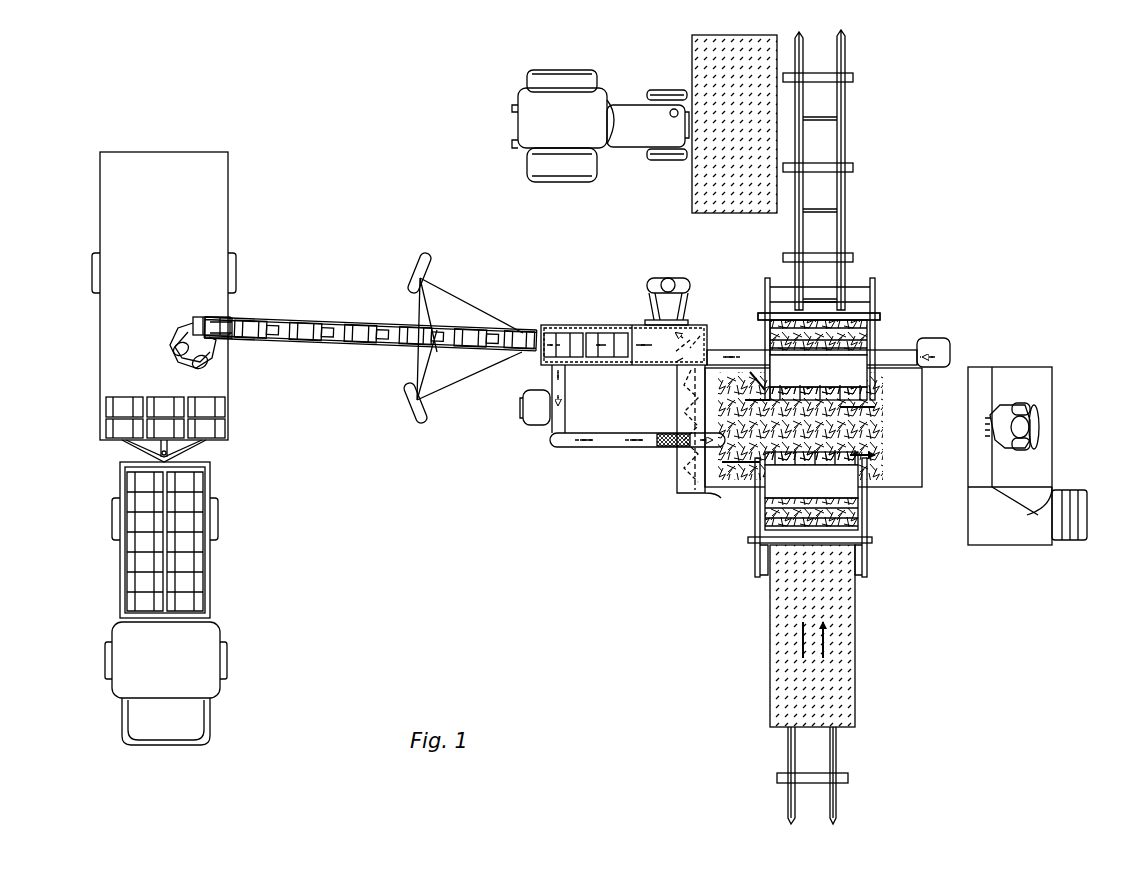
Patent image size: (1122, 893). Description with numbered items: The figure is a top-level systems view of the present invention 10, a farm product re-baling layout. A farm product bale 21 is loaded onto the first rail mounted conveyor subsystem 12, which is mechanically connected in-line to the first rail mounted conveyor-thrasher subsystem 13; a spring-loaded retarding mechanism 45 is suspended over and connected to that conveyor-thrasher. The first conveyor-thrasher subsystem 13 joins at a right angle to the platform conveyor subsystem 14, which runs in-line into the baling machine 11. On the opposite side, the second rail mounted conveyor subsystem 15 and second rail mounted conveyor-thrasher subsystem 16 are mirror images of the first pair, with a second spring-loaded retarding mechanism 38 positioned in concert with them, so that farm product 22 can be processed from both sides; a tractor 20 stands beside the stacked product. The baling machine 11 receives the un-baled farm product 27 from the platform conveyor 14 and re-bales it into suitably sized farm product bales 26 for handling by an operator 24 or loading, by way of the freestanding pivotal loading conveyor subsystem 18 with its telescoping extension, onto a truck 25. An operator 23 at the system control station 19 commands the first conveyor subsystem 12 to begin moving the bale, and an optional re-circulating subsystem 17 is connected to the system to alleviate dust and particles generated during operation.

The present invention 10 is at (312, 87).
The baling machine 11 is at (677, 496).
The first rail mounted conveyor subsystem 12 is at (750, 548).
The first rail mounted conveyor-thrasher subsystem 13 is at (750, 470).
The platform conveyor subsystem 14 is at (907, 480).
The second rail mounted conveyor subsystem 15 is at (855, 30).
The second rail mounted conveyor-thrasher subsystem 16 is at (883, 388).
The re-circulating subsystem 17 is at (730, 348).
The loading conveyor subsystem 18 is at (353, 317).
The system control station 19 is at (1031, 360).
The tractor 20 is at (633, 105).
The farm product bale 21 is at (847, 628).
The farm product 22 is at (723, 217).
The operator 23 is at (1036, 422).
The operator 24 is at (230, 363).
The truck 25 is at (229, 171).
The suitably sized farm product bales 26 is at (236, 312).
The un-baled farm product 27 is at (892, 423).
The second spring-loaded retarding mechanism 38 is at (880, 317).
The spring-loaded retarding mechanism 45 is at (872, 540).